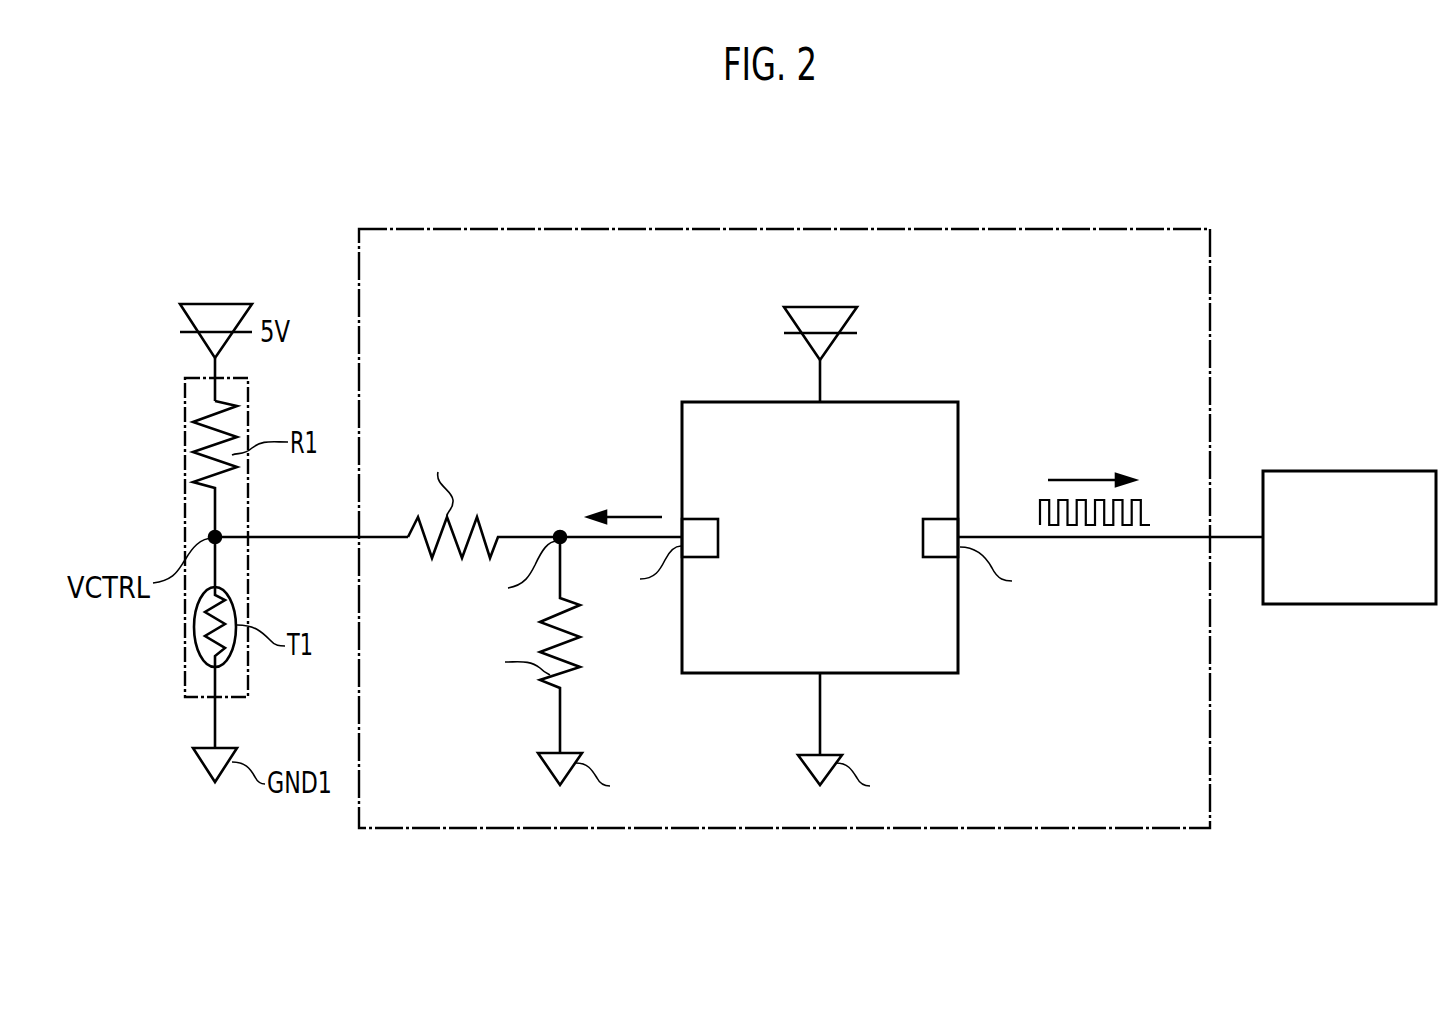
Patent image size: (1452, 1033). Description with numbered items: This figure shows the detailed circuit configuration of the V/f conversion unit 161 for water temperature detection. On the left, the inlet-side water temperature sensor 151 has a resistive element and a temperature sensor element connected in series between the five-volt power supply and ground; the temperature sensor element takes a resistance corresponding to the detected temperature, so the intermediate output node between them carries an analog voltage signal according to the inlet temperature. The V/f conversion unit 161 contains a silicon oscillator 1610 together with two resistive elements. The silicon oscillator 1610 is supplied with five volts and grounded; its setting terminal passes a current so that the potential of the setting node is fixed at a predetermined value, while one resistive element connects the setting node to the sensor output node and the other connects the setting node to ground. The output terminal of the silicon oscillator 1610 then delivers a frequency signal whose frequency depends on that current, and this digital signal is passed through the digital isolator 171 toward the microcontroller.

The inlet-side water temperature sensor 151 is at (184, 537).
The V/f conversion unit 161 is at (811, 508).
The silicon oscillator 1610 is at (737, 402).
The digital isolator 171 is at (1349, 471).